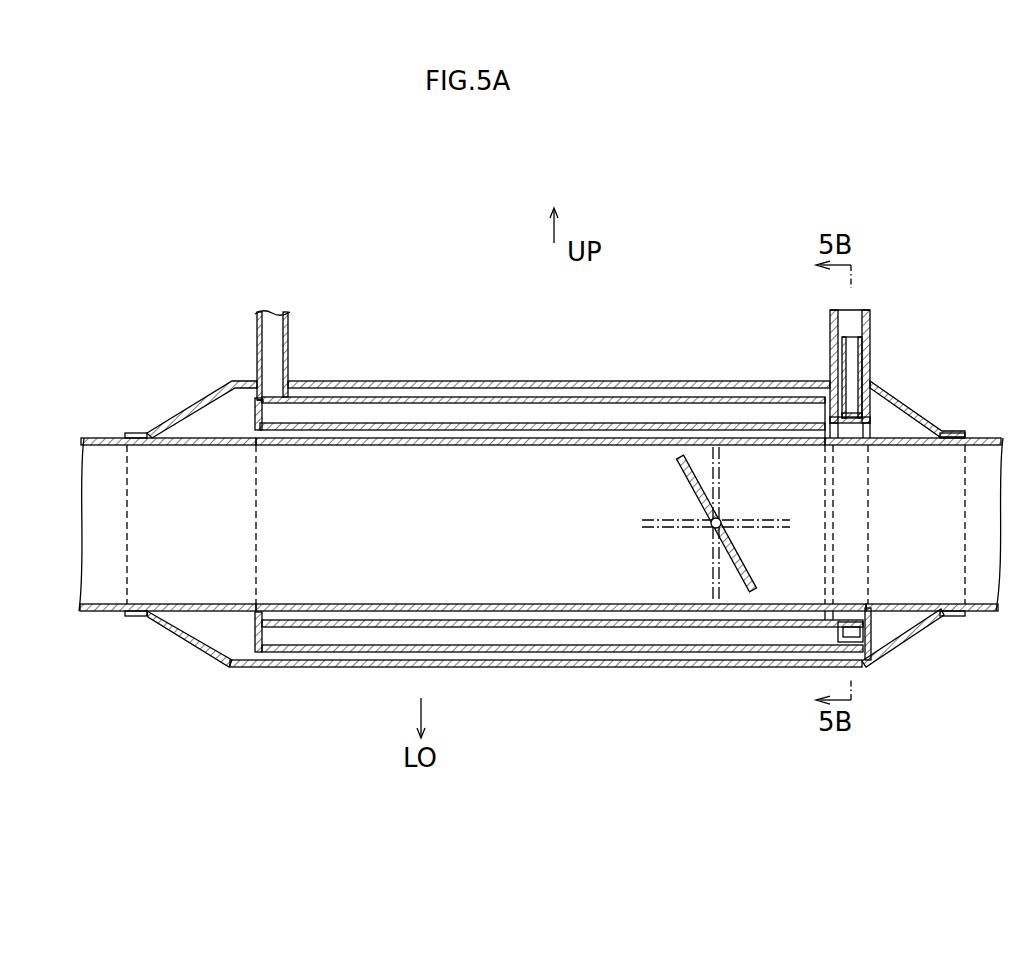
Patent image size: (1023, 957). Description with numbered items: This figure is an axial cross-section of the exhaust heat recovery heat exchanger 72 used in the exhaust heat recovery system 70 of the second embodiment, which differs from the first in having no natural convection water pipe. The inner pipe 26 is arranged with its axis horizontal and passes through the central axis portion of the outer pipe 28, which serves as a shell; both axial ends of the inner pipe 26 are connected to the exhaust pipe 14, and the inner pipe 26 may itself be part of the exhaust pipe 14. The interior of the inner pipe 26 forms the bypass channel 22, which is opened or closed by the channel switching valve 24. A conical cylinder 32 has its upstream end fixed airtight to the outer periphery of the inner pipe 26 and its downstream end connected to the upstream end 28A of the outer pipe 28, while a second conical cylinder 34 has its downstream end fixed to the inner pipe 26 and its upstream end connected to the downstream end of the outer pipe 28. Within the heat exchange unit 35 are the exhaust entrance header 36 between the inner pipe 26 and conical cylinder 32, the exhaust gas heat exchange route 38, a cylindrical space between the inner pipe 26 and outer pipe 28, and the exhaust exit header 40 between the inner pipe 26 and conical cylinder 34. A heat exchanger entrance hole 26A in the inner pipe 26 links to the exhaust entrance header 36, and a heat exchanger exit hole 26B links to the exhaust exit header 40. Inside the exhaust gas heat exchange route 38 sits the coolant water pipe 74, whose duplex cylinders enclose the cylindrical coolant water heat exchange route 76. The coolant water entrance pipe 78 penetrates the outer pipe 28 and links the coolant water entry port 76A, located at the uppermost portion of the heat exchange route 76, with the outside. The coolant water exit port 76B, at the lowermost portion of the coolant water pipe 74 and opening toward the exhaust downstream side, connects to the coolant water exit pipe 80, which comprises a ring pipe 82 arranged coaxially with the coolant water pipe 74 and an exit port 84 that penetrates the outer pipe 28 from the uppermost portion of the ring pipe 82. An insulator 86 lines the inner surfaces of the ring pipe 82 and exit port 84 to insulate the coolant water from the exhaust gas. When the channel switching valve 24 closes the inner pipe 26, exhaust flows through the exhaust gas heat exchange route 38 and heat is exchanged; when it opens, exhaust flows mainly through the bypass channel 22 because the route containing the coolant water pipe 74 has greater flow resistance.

The exhaust pipe 14 is at (105, 437).
The bypass channel 22 is at (492, 537).
The channel switching valve 24 is at (688, 481).
The inner pipe 26 is at (638, 438).
The heat exchanger entrance hole 26A is at (206, 446).
The heat exchanger exit hole 26B is at (906, 446).
The outer pipe 28 is at (587, 382).
The upstream end of the outer pipe 28A is at (229, 668).
The conical cylinder 32 is at (180, 412).
The conical cylinder 34 is at (920, 414).
The heat exchange unit 35 is at (722, 380).
The exhaust entrance header 36 is at (210, 636).
The exhaust gas heat exchange route 38 is at (552, 436).
The exhaust exit header 40 is at (893, 628).
The exhaust heat recovery system 70 is at (718, 206).
The exhaust heat recovery heat exchanger 72 is at (704, 250).
The coolant water pipe 74 is at (391, 396).
The coolant water heat exchange route 76 is at (458, 415).
The coolant water entry port 76A is at (259, 399).
The coolant water exit port 76B is at (826, 634).
The coolant water entrance pipe 78 is at (288, 348).
The coolant water exit pipe 80 is at (924, 360).
The ring pipe 82 is at (880, 455).
The exit port 84 is at (870, 329).
The insulator 86 is at (850, 338).